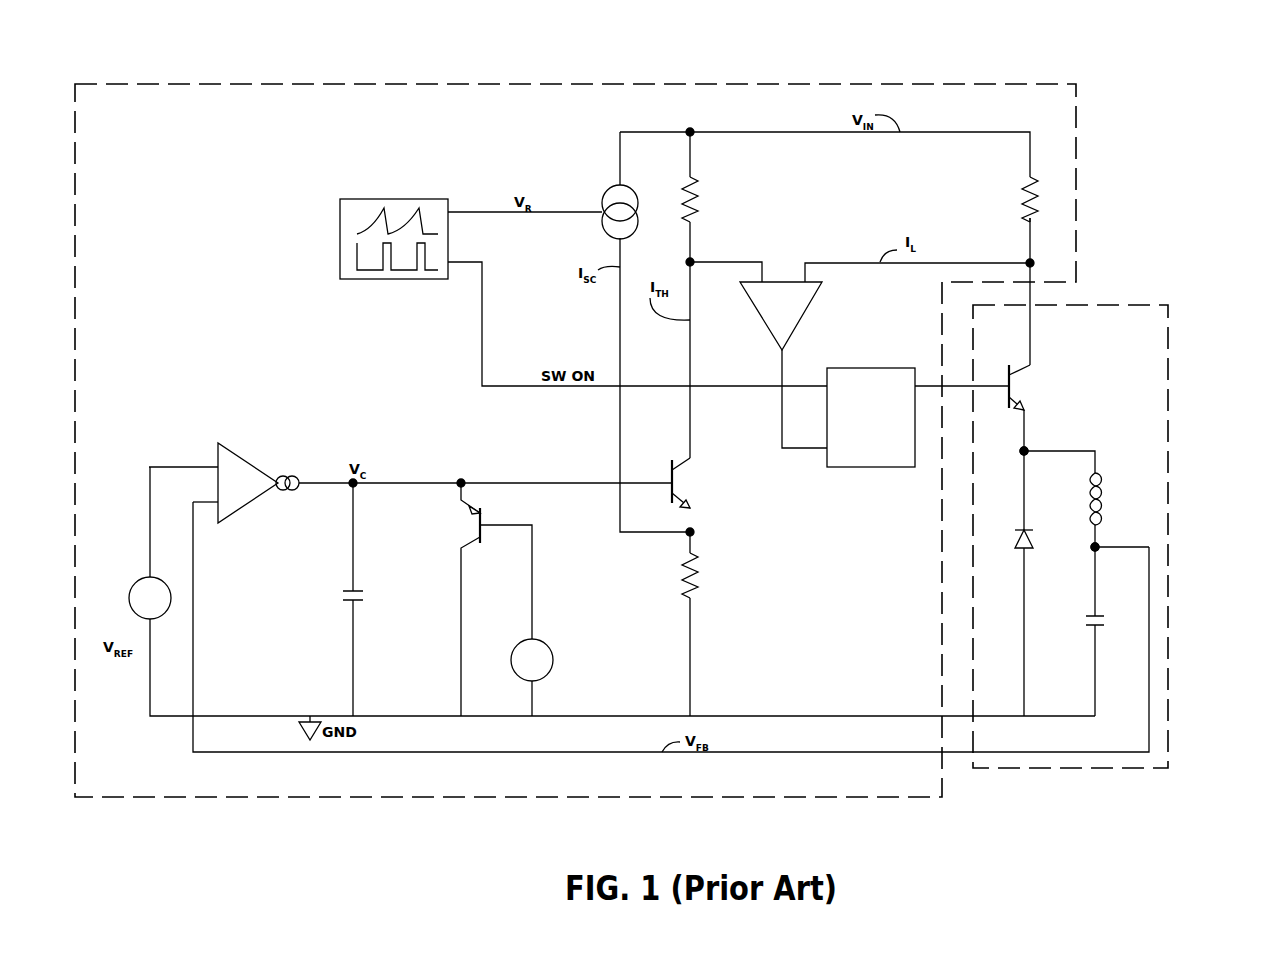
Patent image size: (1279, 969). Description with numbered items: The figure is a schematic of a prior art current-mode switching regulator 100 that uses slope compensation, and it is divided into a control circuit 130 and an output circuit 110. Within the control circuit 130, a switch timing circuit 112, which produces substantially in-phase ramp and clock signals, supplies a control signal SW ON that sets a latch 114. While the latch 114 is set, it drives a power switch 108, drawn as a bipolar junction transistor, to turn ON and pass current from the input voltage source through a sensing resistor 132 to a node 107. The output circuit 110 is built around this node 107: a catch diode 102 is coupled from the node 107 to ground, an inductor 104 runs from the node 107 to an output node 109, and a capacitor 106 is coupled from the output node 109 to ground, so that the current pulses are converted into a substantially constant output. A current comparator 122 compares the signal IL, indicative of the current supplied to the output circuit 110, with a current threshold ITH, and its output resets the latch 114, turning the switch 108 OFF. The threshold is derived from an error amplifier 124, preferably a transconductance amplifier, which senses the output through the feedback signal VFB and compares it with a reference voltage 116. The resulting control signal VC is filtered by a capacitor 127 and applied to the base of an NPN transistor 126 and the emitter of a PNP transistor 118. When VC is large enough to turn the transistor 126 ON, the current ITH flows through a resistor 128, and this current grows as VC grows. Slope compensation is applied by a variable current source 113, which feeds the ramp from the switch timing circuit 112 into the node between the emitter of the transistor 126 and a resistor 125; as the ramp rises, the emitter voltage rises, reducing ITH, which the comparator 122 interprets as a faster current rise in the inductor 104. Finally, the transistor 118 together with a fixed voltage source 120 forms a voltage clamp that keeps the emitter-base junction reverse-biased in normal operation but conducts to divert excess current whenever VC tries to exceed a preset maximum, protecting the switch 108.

The current-mode switching regulator 100 is at (1250, 56).
The catch diode 102 is at (1036, 538).
The inductor 104 is at (1087, 490).
The capacitor 106 is at (1093, 627).
The node 107 is at (1028, 448).
The power switch 108 is at (1008, 374).
The output node 109 is at (1099, 546).
The output circuit 110 is at (1170, 332).
The switch timing circuit 112 is at (372, 199).
The variable current source 113 is at (604, 195).
The latch 114 is at (870, 368).
The reference voltage 116 is at (133, 588).
The PNP transistor 118 is at (485, 515).
The fixed voltage source 120 is at (515, 653).
The current comparator 122 is at (766, 280).
The error amplifier 124 is at (245, 455).
The resistor 125 is at (705, 558).
The NPN transistor 126 is at (672, 478).
The capacitor 127 is at (350, 590).
The resistor 128 is at (688, 186).
The control circuit 130 is at (1077, 136).
The sensing resistor 132 is at (1024, 187).